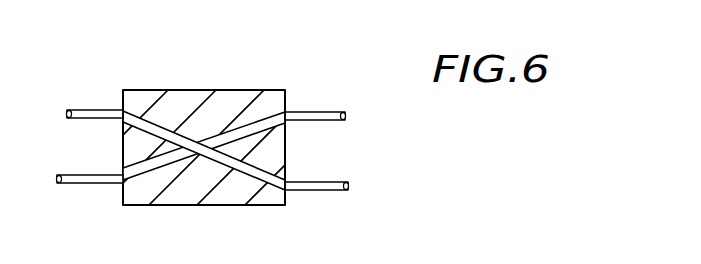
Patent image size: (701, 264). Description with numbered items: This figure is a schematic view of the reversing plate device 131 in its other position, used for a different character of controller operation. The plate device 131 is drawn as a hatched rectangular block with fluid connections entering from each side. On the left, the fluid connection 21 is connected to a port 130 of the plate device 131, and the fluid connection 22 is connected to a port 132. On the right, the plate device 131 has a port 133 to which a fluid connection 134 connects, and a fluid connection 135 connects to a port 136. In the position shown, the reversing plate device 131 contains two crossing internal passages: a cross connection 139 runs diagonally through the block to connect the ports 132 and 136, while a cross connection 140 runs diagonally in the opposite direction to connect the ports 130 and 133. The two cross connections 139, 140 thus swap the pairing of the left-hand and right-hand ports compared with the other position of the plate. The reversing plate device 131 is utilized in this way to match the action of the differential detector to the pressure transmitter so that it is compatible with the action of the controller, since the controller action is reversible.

The fluid connection 21 is at (62, 176).
The fluid connection 22 is at (70, 111).
The port 130 is at (122, 182).
The reversing plate device 131 is at (208, 205).
The port 132 is at (123, 112).
The port 133 is at (285, 113).
The fluid connection 134 is at (328, 114).
The fluid connection 135 is at (333, 190).
The port 136 is at (292, 187).
The cross connection 139 is at (163, 129).
The cross connection 140 is at (165, 165).